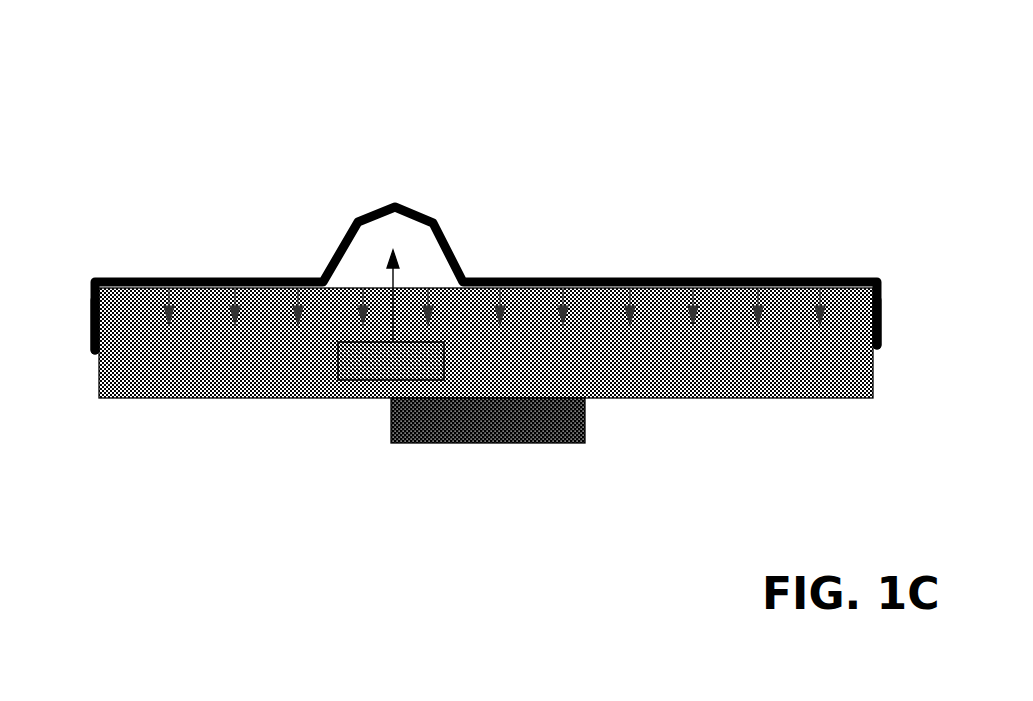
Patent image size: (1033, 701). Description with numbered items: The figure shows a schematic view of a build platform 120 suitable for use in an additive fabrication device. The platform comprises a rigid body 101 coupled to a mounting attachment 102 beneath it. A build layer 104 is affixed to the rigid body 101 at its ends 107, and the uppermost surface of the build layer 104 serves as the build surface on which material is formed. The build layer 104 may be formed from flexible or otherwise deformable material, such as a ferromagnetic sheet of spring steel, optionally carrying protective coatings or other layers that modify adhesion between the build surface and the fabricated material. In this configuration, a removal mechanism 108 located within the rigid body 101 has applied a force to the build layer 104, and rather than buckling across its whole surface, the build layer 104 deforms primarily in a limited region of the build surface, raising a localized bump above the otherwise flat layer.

The light emitting device 120 is at (491, 252).
The rigid body 101 is at (738, 380).
The mounting attachment 102 is at (428, 430).
The build layer 104 is at (642, 279).
The ends 107 is at (91, 310).
The removal mechanism 108 is at (391, 315).